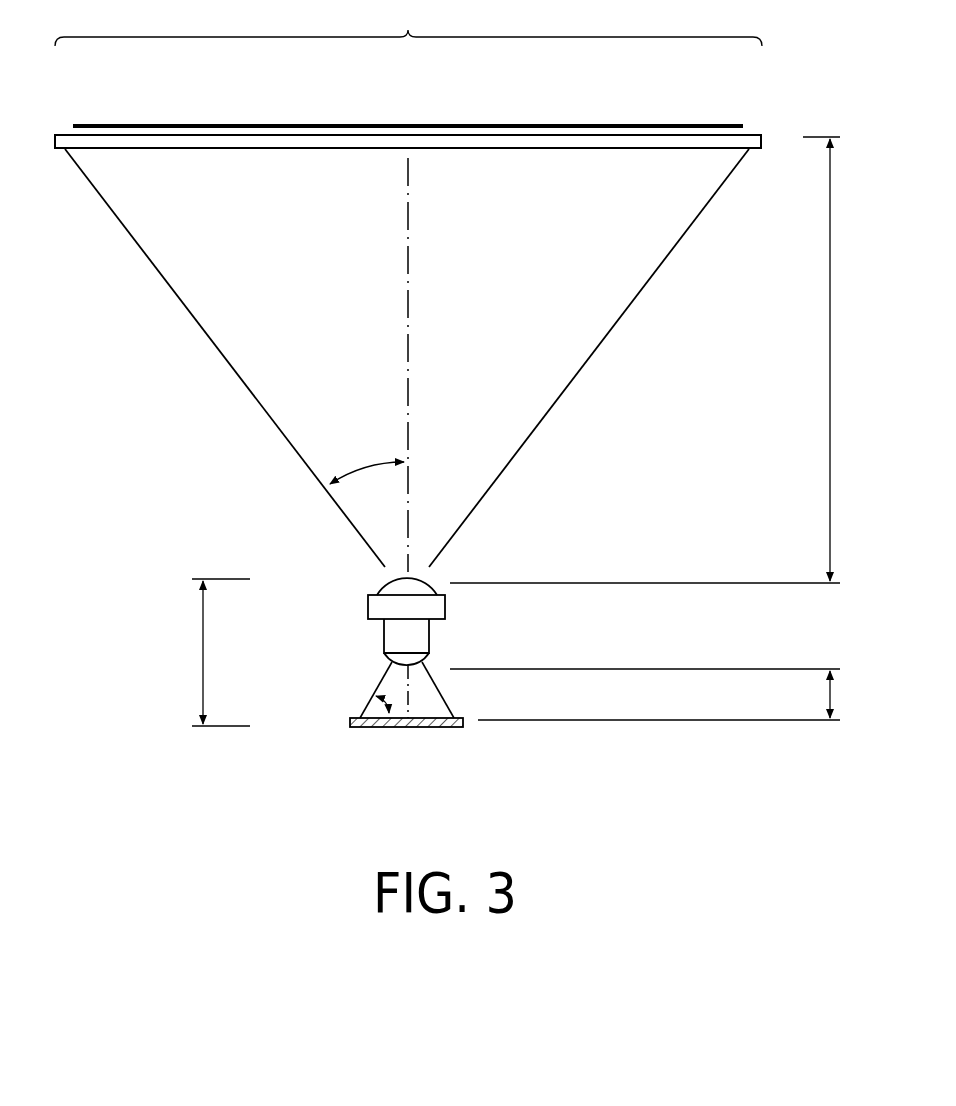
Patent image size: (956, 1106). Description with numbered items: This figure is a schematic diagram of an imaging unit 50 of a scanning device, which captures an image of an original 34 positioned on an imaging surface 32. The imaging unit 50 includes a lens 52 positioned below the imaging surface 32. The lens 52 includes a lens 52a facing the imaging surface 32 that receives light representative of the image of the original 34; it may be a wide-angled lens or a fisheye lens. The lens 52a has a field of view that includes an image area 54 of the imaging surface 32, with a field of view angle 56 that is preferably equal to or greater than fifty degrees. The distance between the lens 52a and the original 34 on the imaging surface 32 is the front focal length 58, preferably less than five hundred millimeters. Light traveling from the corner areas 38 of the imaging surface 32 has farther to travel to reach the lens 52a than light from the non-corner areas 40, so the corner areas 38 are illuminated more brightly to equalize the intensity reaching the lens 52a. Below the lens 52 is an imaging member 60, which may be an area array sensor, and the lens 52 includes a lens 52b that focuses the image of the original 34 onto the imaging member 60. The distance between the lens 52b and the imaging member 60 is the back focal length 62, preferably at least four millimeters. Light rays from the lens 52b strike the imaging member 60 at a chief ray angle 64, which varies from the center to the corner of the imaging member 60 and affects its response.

The imaging surface 32 is at (677, 152).
The original 34 is at (174, 123).
The corner areas 38 is at (55, 148).
The non-corner areas 40 is at (500, 152).
The imaging unit 50 is at (208, 652).
The lens 52 is at (368, 605).
The lens 52a is at (430, 584).
The lens 52b is at (413, 662).
The image area 54 is at (408, 23).
The field of view angle 56 is at (367, 462).
The front focal length 58 is at (659, 360).
The imaging member 60 is at (373, 729).
The back focal length 62 is at (659, 694).
The chief ray angle 64 is at (380, 696).